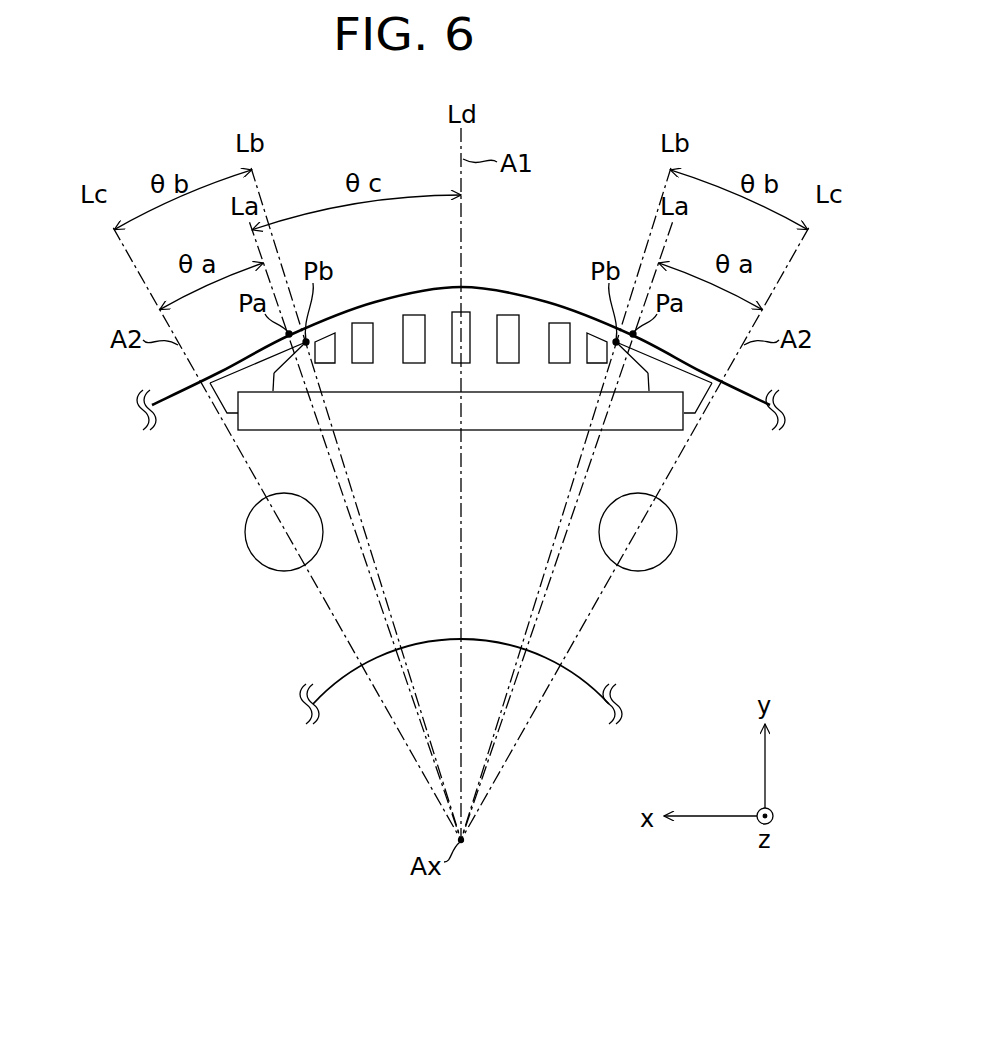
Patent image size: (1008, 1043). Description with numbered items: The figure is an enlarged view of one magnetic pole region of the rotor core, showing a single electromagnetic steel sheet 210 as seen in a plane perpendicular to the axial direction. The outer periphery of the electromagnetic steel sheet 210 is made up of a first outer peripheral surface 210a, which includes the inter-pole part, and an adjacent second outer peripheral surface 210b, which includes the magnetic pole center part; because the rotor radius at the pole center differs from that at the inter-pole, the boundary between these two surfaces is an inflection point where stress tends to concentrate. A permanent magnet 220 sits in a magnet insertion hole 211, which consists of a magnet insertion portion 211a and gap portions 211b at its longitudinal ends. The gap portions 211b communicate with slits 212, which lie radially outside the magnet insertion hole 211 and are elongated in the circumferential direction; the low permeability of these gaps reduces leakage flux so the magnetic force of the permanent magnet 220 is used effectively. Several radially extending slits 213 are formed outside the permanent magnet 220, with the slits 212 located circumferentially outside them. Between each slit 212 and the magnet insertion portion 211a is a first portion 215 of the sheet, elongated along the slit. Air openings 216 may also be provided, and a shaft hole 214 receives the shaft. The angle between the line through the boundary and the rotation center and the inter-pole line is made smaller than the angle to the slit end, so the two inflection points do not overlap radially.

The electromagnetic steel sheet 210 is at (481, 288).
The first outer peripheral surface 210a is at (176, 383).
The second outer peripheral surface 210b is at (449, 285).
The magnet insertion hole 211 is at (147, 443).
The magnet insertion portion 211a is at (268, 431).
The gap portion 211b is at (222, 410).
The slit 212 is at (280, 362).
The slit 213 is at (412, 315).
The shaft hole 214 is at (482, 642).
The first portion 215 is at (288, 382).
The air opening 216 is at (258, 551).
The permanent magnet 220 is at (418, 412).